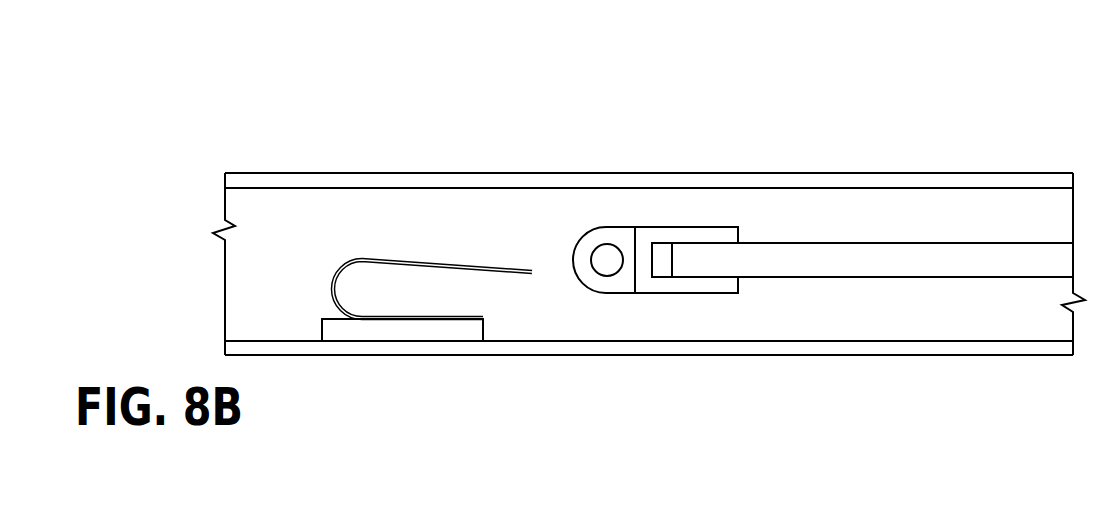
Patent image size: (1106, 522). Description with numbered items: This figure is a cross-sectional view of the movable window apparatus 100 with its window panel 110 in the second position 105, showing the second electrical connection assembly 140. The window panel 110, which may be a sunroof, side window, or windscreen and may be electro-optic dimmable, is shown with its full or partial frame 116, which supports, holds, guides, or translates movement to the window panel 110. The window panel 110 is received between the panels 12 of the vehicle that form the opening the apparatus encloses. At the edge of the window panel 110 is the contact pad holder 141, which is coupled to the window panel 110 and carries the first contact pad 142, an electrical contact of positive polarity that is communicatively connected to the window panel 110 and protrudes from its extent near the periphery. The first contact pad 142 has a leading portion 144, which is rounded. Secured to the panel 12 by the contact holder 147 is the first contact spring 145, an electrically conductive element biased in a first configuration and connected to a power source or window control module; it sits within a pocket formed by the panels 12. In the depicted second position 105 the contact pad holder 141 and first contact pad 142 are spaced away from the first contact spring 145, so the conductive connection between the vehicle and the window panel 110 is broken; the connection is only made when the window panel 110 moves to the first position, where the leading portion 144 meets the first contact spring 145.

The panel 12 is at (971, 173).
The movable window apparatus 100 is at (655, 225).
The second position 105 is at (940, 105).
The window panel 110 is at (843, 243).
The frame 116 is at (662, 248).
The second electrical connection assembly 140 is at (765, 220).
The contact pad holder 141 is at (712, 227).
The first contact pad 142 is at (605, 238).
The leading portion 144 is at (573, 259).
The first contact spring 145 is at (466, 258).
The contact holder 147 is at (330, 318).